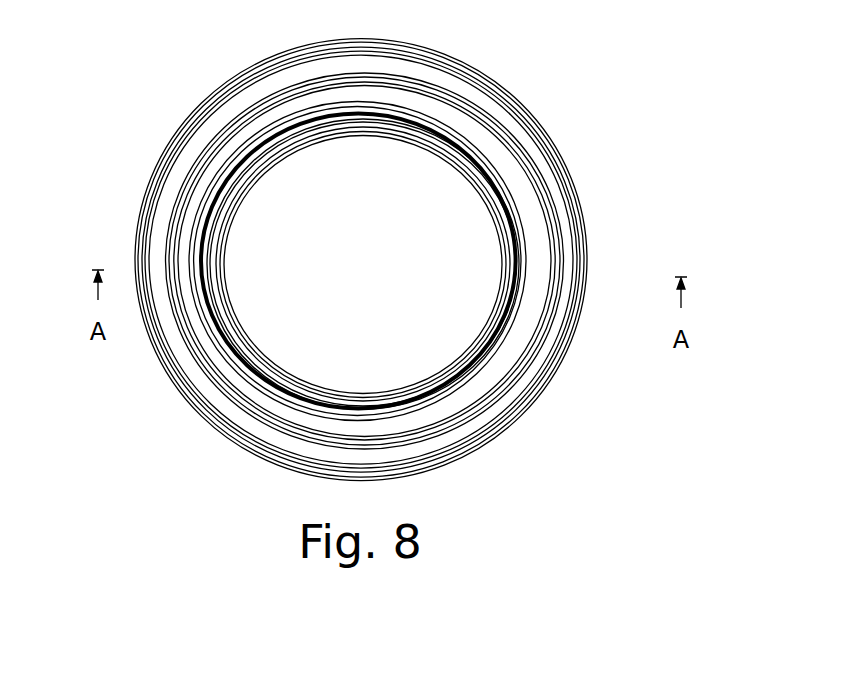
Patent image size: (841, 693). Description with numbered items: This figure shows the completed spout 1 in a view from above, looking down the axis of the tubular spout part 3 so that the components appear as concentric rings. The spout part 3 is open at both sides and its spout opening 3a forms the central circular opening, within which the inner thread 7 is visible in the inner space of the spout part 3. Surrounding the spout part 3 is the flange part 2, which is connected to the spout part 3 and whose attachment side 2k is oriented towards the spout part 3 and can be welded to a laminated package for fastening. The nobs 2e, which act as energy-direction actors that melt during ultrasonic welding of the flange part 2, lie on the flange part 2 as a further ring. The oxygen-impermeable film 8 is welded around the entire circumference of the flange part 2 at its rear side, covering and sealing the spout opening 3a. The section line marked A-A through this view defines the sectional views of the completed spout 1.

The spout 1 is at (545, 117).
The flange part 2 is at (557, 205).
The attachment side 2k is at (508, 407).
The nobs 2e is at (560, 250).
The spout part 3 is at (497, 171).
The spout opening 3a is at (398, 180).
The inner thread 7 is at (495, 237).
The oxygen-impermeable film 8 is at (293, 333).